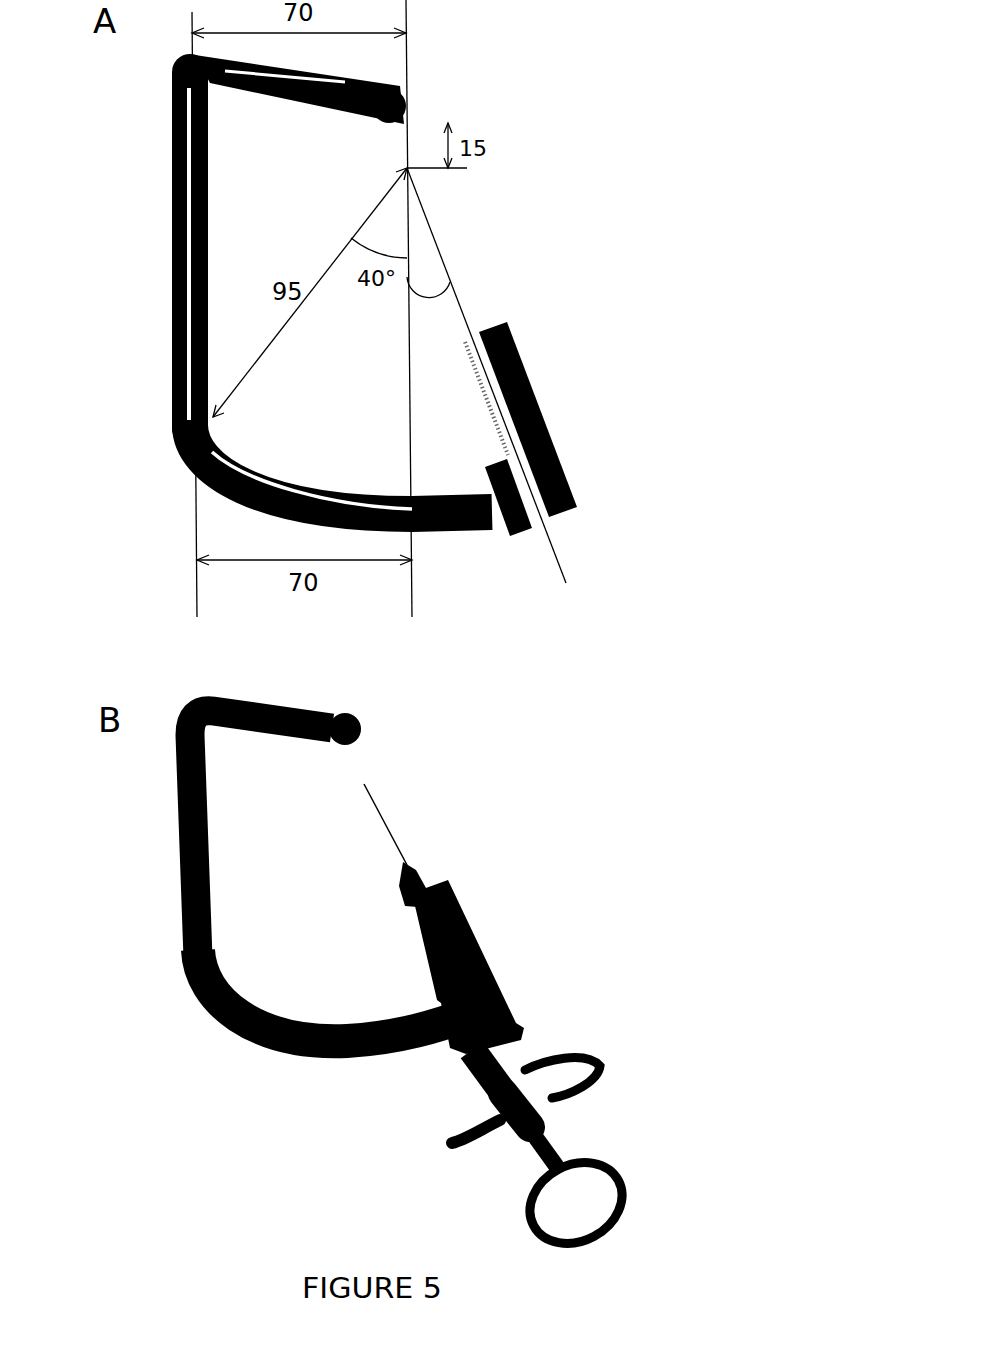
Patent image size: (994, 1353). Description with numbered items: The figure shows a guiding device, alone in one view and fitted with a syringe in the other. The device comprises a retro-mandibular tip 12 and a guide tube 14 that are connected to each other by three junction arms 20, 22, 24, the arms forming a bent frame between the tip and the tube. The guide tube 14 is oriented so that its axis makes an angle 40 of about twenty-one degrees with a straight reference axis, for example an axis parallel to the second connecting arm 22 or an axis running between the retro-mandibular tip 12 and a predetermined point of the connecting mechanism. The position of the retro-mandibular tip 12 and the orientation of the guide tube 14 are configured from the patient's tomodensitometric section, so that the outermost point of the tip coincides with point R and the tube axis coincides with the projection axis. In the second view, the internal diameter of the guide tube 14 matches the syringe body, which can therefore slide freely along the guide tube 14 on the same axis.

In FIG. 5A, the retro-mandibular tip 12 is at (407, 123).
In FIG. 5B, the retro-mandibular tip 12 is at (375, 726).
In FIG. 5A, the guide tube 14 is at (560, 405).
In FIG. 5B, the guide tube 14 is at (494, 945).
In FIG. 5A, the junction arm 20 is at (286, 105).
In FIG. 5A, the second connecting arm 22 is at (157, 220).
In FIG. 5A, the junction arm 24 is at (260, 510).
In FIG. 5A, the angle 40 is at (455, 308).